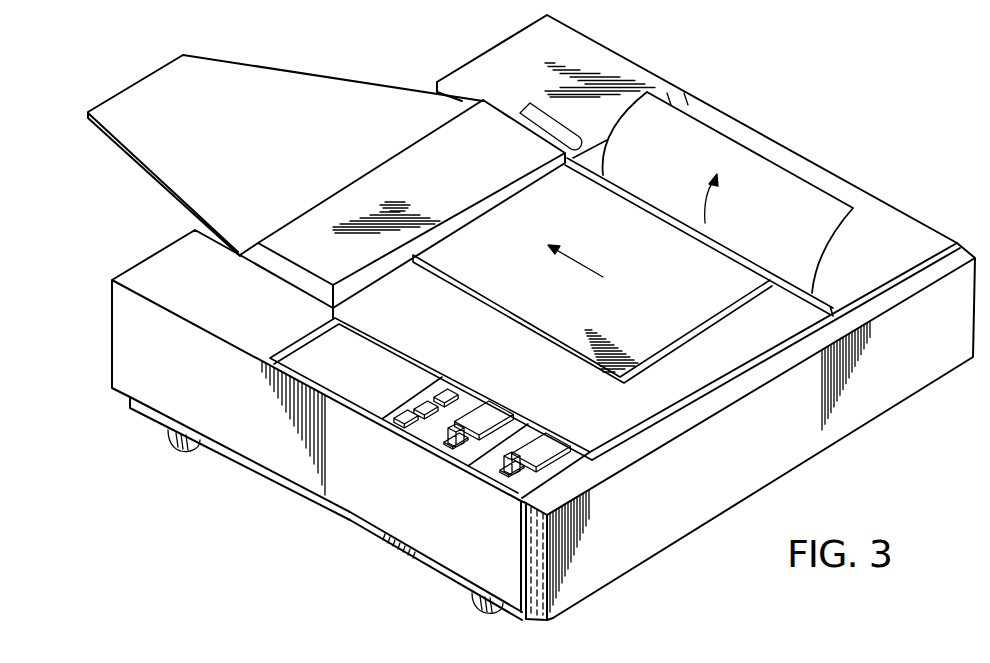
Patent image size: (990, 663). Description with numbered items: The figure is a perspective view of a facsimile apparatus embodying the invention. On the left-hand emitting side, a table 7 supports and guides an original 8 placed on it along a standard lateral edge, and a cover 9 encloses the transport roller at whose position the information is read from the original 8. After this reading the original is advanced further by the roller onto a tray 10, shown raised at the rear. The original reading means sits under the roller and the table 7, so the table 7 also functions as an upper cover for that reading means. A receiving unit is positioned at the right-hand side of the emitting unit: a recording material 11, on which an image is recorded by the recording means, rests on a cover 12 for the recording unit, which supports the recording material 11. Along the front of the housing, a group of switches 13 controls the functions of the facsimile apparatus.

The table 7 is at (710, 380).
The original 8 is at (712, 298).
The cover for transport roller 9 is at (497, 123).
The tray 10 is at (285, 84).
The recording material 11 is at (820, 230).
The cover for the recording unit 12 is at (922, 233).
The group of switches 13 is at (428, 433).